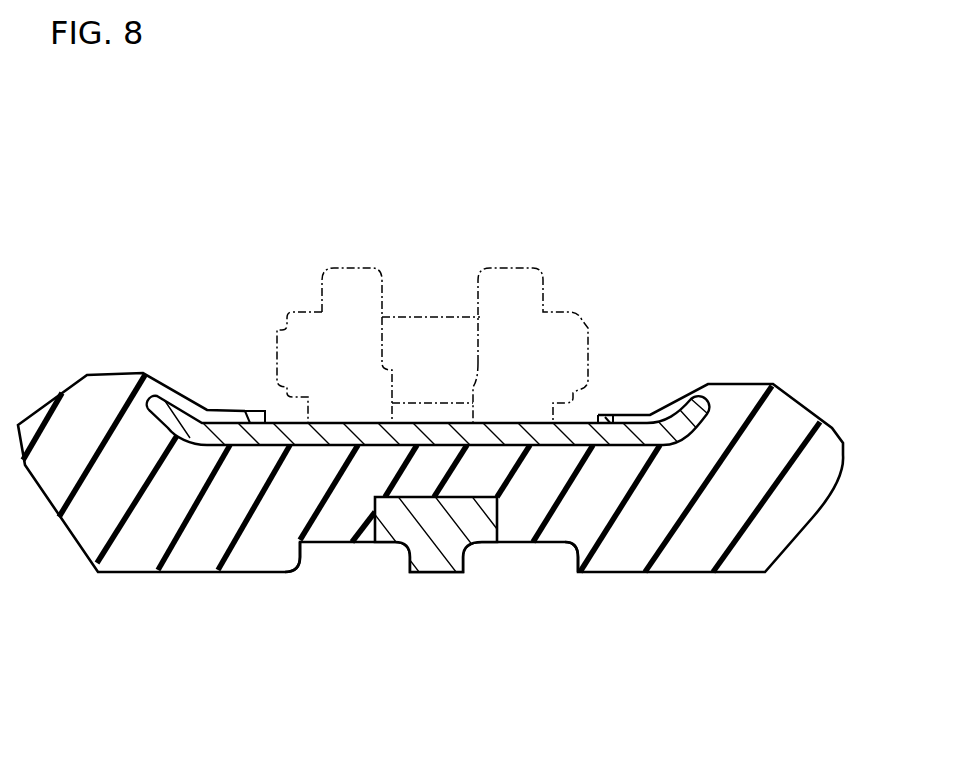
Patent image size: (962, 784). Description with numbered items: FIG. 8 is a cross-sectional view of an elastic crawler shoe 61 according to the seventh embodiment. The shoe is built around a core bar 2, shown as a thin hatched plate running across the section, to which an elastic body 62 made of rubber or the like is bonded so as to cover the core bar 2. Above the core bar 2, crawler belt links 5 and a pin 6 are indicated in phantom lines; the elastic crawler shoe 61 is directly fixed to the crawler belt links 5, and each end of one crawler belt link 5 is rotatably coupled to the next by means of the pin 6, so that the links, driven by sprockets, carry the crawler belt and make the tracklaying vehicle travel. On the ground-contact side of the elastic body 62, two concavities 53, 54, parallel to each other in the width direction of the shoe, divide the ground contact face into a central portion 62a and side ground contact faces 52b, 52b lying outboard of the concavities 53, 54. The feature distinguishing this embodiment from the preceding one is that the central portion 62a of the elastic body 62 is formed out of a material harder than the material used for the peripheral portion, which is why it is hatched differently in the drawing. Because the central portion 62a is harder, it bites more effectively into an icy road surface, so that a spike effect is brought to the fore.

The core bar 2 is at (621, 428).
The crawler belt links 5 is at (320, 297).
The pin 6 is at (452, 310).
The side ground contact faces 52b is at (193, 573).
The concavity 53 is at (297, 572).
The concavity 54 is at (577, 573).
The elastic crawler shoe 61 is at (725, 357).
The elastic body 62 is at (785, 425).
The central portion 62a is at (443, 573).